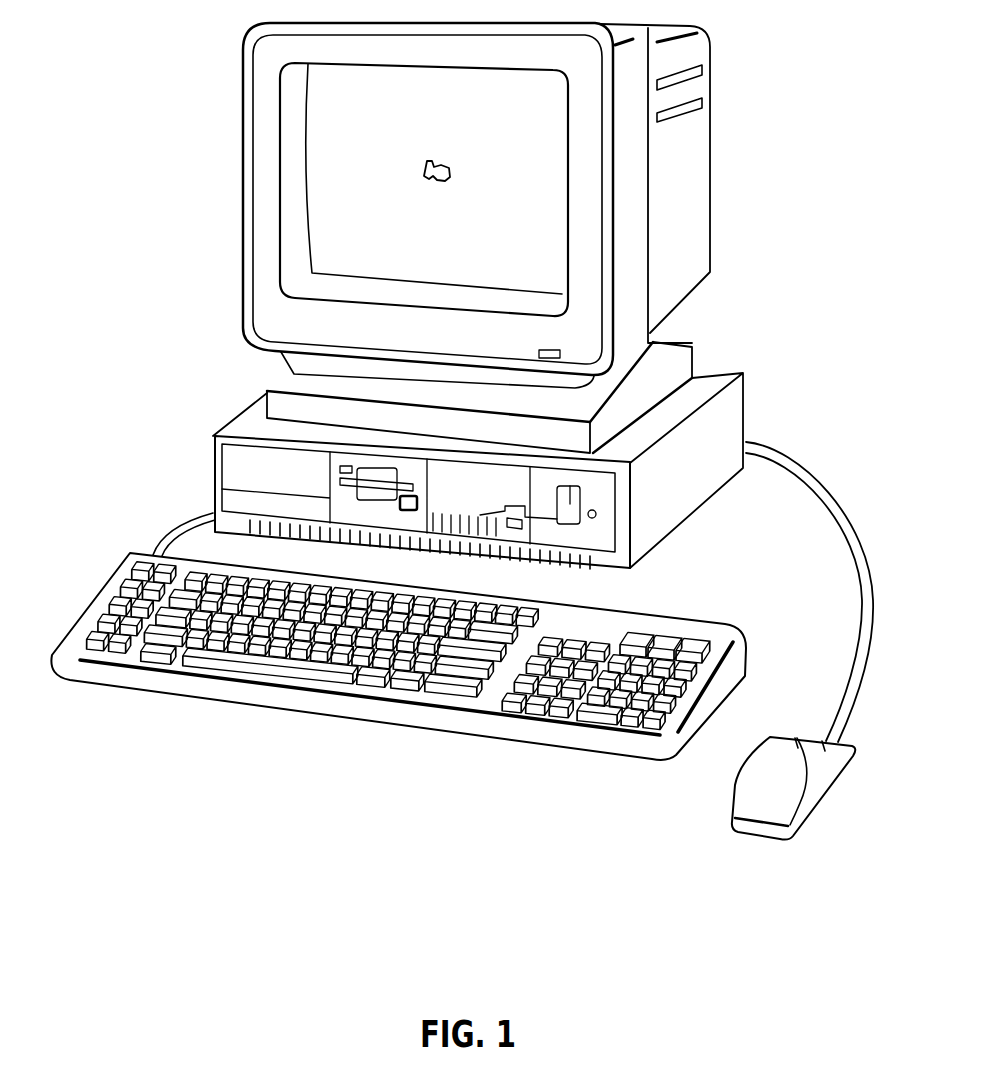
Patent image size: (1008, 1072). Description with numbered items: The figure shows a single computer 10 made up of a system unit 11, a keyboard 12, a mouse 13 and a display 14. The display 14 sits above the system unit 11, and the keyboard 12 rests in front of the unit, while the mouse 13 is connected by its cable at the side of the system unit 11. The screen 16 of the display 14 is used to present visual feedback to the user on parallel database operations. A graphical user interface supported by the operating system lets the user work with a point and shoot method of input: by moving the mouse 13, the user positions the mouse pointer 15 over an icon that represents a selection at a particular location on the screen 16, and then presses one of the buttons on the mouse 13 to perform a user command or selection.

The computer 10 is at (178, 281).
The system unit 11 is at (213, 455).
The keyboard 12 is at (85, 680).
The mouse 13 is at (843, 783).
The display 14 is at (243, 179).
The mouse pointer 15 is at (433, 158).
The screen 16 is at (388, 222).